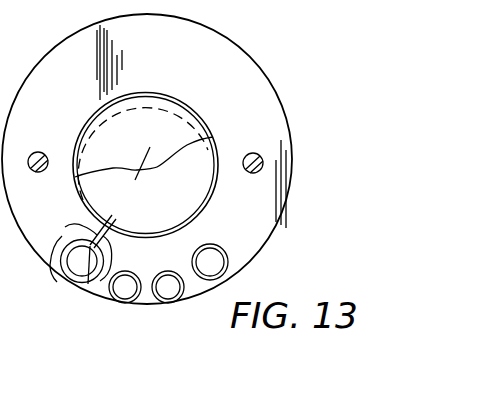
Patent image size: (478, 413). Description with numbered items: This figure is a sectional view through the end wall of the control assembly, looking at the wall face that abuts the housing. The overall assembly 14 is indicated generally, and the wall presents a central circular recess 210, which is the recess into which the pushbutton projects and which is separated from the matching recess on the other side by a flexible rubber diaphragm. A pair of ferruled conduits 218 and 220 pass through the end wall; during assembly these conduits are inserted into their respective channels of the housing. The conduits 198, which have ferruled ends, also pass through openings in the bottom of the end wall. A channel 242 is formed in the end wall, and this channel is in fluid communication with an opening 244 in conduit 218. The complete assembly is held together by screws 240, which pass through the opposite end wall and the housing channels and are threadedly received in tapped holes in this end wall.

The apparatus 14 is at (188, 178).
The circular recess 210 is at (192, 110).
The screws 240 is at (42, 151).
The channel 242 is at (138, 196).
The ferruled conduit 218 is at (70, 231).
The ferruled conduit 220 is at (221, 244).
The conduits 198 is at (159, 275).
The opening 244 is at (88, 284).